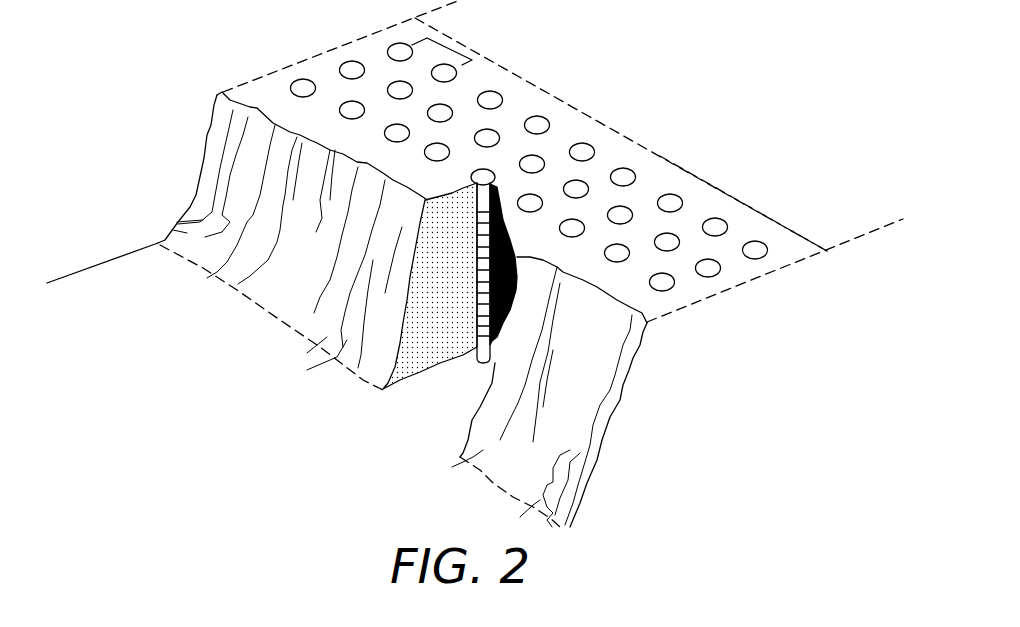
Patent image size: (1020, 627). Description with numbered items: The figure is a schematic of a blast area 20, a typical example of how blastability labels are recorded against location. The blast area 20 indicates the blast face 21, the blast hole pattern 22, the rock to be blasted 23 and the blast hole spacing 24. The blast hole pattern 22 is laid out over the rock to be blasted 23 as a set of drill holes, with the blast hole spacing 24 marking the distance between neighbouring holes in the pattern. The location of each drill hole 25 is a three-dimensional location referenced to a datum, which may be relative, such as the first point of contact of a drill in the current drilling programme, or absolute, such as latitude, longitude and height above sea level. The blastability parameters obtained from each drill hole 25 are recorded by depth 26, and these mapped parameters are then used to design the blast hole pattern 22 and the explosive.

The blast area 20 is at (663, 409).
The blast face 21 is at (206, 163).
The blast hole pattern 22 is at (718, 57).
The rock to be blasted 23 is at (742, 230).
The blast hole spacing 24 is at (453, 47).
The drill hole 25 is at (303, 88).
The depth 26 is at (475, 353).